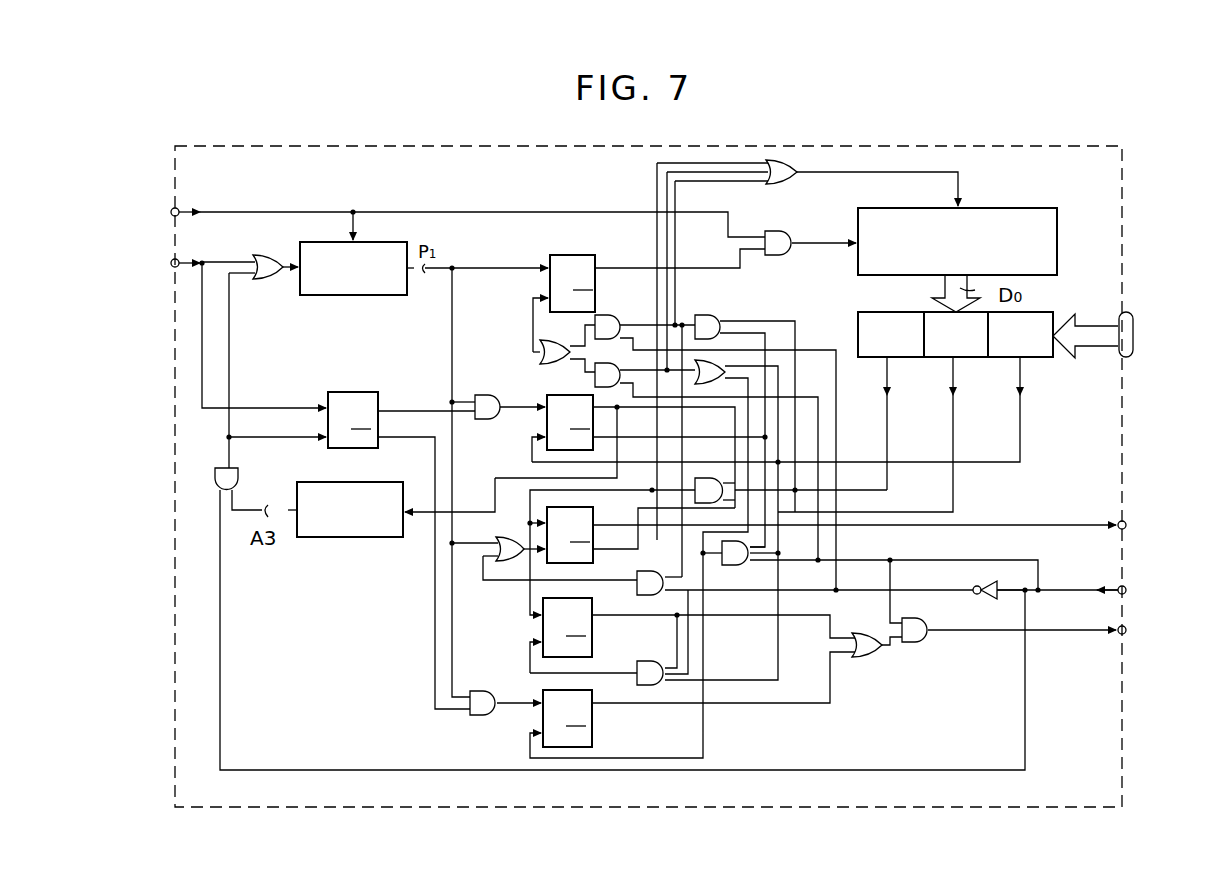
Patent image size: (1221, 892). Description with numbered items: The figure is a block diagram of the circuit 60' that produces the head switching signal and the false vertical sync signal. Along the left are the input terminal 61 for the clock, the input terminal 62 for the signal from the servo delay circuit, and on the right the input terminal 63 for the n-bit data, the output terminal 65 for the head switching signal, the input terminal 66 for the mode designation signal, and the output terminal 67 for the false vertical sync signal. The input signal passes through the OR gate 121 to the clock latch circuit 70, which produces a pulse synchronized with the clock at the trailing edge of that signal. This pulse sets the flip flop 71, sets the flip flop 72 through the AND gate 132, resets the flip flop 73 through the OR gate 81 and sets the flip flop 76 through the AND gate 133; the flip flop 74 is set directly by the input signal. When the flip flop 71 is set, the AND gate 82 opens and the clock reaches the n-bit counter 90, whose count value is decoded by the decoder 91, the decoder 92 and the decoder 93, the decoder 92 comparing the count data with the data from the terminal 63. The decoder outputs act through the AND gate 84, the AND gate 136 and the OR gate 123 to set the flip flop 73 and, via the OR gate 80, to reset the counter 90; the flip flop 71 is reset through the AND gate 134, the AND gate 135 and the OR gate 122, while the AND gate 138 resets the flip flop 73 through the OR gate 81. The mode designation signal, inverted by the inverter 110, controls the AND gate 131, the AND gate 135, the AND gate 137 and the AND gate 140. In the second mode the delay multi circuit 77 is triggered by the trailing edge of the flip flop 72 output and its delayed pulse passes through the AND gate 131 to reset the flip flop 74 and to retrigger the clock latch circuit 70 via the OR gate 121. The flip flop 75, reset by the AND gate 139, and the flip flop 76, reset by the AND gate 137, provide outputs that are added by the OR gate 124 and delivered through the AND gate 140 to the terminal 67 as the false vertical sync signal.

The circuit for producing the head switching signal and false vertical sync signal 60' is at (648, 454).
The input terminal of the clock CP1 61 is at (178, 208).
The input terminal of the output A1 62 is at (178, 259).
The input terminal of the n-bit data D1 63 is at (1134, 318).
The output terminal of the head switching signal Q3 65 is at (1126, 521).
The input terminal of a mode designation signal M 66 is at (1126, 586).
The output terminal of the false vertical sync signal V 67 is at (1126, 634).
The clock latch circuit 70 is at (357, 296).
The R/S flip flop 71 is at (578, 255).
The R/S flip flop 72 is at (546, 402).
The R/S flip flop 73 is at (593, 512).
The R/S flip flop 74 is at (355, 392).
The R/S flip flop 75 is at (592, 605).
The R/S flip flop 76 is at (592, 697).
The delay multi circuit 77 is at (347, 538).
The OR gate 80 is at (788, 178).
The OR gate 81 is at (512, 537).
The AND gate 82 is at (786, 235).
The AND gate 84 is at (705, 478).
The n-bit counter 90 is at (1057, 250).
The decoder 91 is at (905, 359).
The decoder 92 is at (1040, 359).
The decoder 93 is at (975, 359).
The inverter 110 is at (986, 600).
The OR gate 121 is at (264, 256).
The OR gate 122 is at (540, 346).
The OR gate 123 is at (698, 362).
The OR gate 124 is at (862, 632).
The AND gate 131 is at (238, 482).
The AND gate 132 is at (492, 419).
The AND gate 133 is at (485, 715).
The AND gate 134 is at (612, 315).
The AND gate 135 is at (596, 374).
The AND gate 136 is at (712, 317).
The AND gate 137 is at (735, 565).
The AND gate 138 is at (642, 574).
The AND gate 139 is at (648, 663).
The AND gate 140 is at (912, 642).